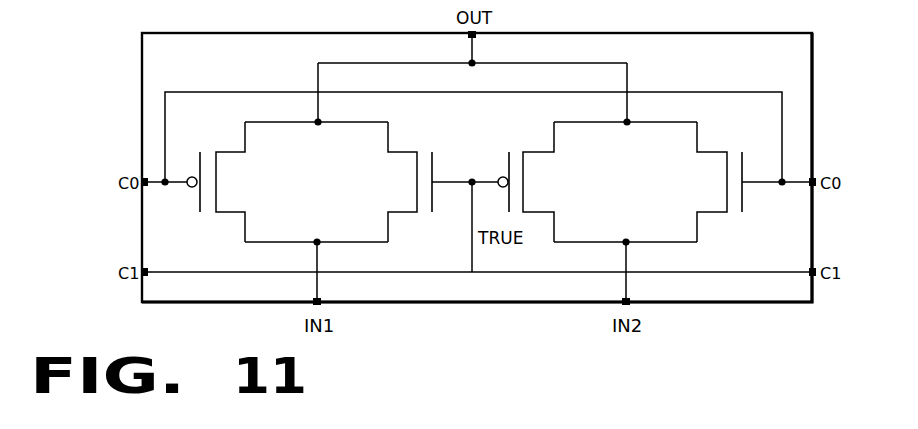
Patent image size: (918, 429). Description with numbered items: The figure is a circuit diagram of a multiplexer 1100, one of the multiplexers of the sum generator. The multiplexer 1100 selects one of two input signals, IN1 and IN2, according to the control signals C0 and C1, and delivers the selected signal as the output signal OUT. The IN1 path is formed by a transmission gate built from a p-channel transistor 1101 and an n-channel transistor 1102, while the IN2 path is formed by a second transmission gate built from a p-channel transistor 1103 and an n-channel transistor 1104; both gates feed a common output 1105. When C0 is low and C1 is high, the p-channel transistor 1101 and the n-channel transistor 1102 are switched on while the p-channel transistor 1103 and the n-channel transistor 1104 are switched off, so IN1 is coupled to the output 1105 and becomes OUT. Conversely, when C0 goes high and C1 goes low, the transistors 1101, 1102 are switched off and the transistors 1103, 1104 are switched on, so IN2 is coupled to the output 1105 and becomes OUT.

The multiplexer 1100 is at (477, 167).
The p-channel transistor 1101 is at (253, 182).
The n-channel transistor 1102 is at (374, 182).
The p-channel transistor 1103 is at (563, 182).
The n-channel transistor 1104 is at (683, 182).
The output 1105 is at (472, 43).